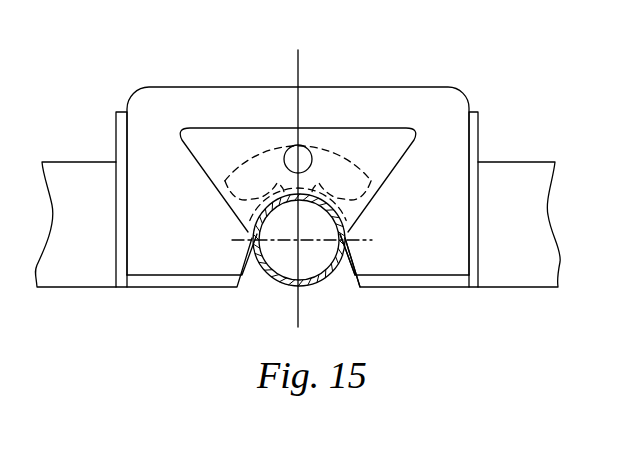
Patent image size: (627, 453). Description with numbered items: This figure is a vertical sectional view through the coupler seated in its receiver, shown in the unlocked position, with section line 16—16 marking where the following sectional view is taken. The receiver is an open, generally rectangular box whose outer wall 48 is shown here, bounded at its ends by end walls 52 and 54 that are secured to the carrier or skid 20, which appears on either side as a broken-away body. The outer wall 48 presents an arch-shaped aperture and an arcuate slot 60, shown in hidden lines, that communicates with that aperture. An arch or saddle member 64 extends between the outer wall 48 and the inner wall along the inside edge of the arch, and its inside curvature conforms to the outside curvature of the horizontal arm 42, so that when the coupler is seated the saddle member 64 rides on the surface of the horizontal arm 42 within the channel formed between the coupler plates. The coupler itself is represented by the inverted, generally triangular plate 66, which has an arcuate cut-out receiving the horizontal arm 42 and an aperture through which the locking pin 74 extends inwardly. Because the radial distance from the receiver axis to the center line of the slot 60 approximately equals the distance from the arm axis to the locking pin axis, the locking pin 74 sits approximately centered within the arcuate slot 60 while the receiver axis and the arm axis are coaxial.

The section line 16 is at (298, 50).
The carrier or skid 20 is at (522, 162).
The horizontal arm 42 is at (273, 280).
The outer wall 48 is at (410, 87).
The end wall 52 is at (472, 110).
The end wall 54 is at (125, 112).
The arcuate slot 60 is at (362, 167).
The arch or saddle member 64 is at (348, 282).
The triangular plate 66 is at (350, 128).
The locking pin 74 is at (293, 146).